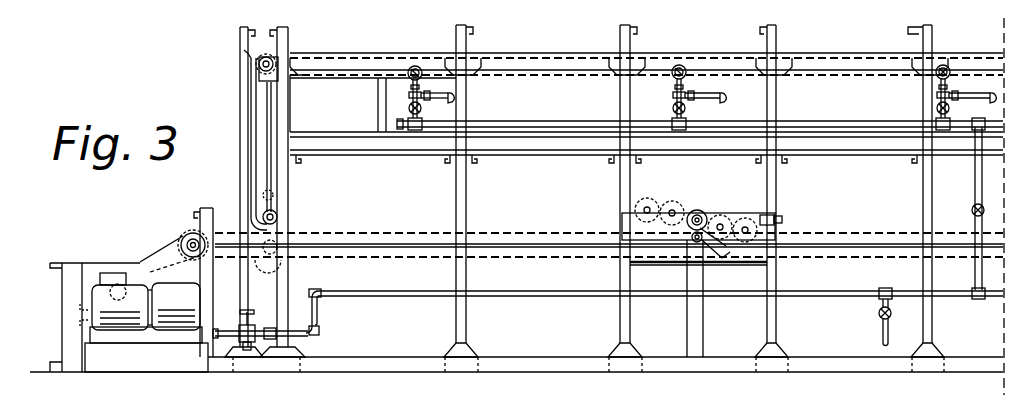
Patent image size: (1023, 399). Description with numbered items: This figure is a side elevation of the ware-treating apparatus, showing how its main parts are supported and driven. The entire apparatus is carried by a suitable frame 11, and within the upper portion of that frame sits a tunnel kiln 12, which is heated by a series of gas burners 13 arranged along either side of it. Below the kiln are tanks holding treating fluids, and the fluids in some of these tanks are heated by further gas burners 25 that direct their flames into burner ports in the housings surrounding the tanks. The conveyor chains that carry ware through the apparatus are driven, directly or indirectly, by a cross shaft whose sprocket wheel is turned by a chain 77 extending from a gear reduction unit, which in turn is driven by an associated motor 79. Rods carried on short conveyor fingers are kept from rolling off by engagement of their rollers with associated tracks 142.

The frame 11 is at (564, 52).
The tunnel kiln 12 is at (547, 117).
The gas burners 13 is at (450, 100).
The gas burners 25 is at (881, 344).
The chain 77 is at (160, 246).
The motor 79 is at (172, 318).
The tracks 142 is at (250, 62).